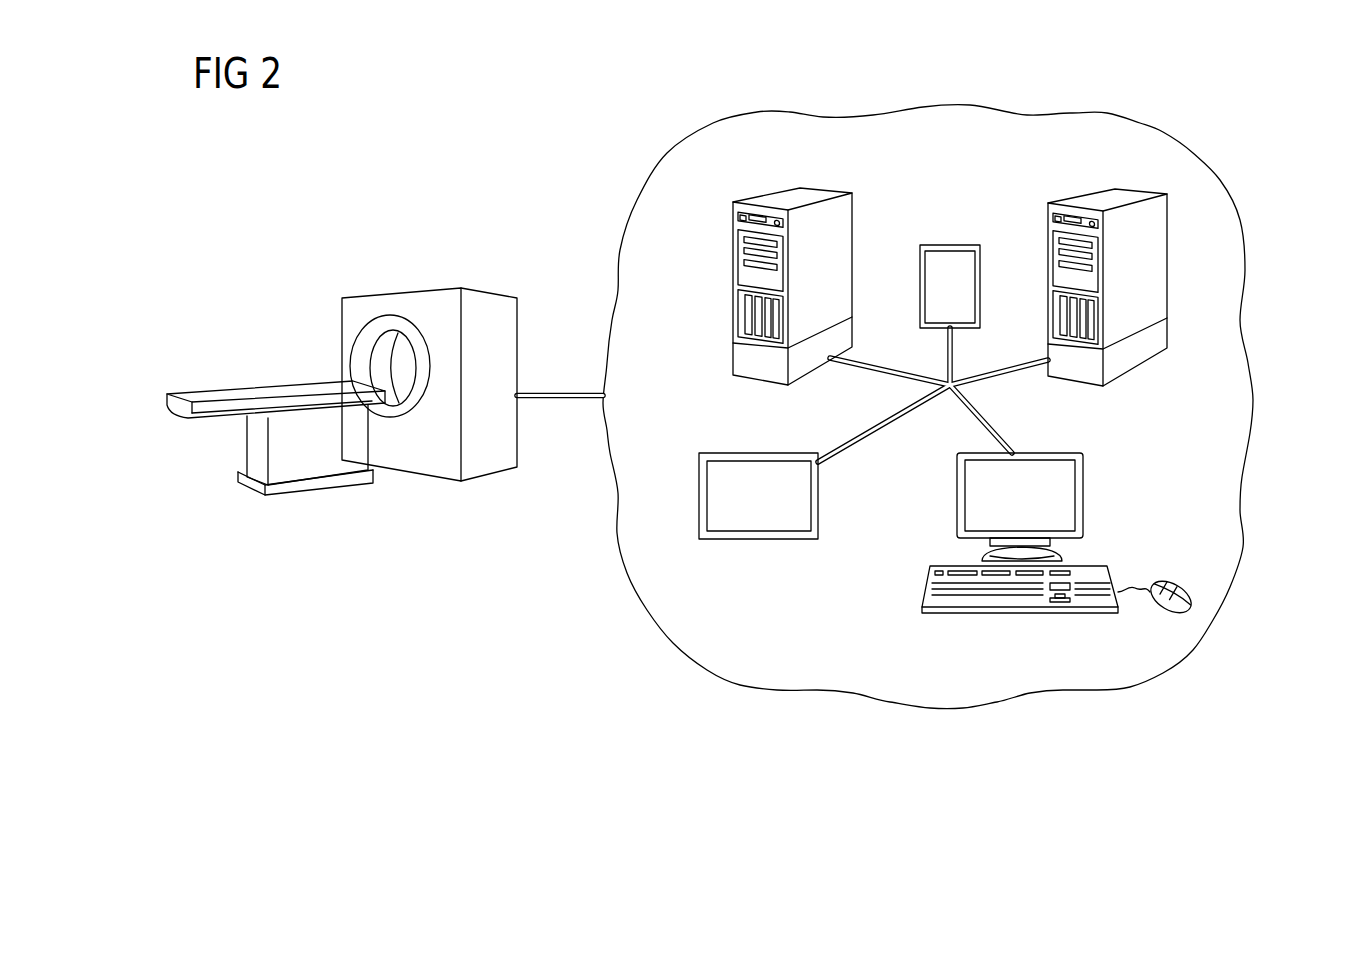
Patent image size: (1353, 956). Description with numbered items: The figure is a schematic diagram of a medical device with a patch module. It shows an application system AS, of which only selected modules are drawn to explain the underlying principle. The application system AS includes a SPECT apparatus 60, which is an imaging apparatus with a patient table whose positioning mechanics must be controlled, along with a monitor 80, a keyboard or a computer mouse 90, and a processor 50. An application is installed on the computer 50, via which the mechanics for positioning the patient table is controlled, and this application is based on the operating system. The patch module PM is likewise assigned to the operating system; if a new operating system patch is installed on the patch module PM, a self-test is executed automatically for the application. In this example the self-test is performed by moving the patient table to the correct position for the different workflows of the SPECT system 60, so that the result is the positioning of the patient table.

The SPECT apparatus 60 is at (352, 294).
The processor 50 is at (777, 195).
The monitor 80 is at (1083, 500).
The keyboard or computer mouse 90 is at (1173, 582).
The patch module PM is at (777, 540).
The application system AS is at (1166, 127).